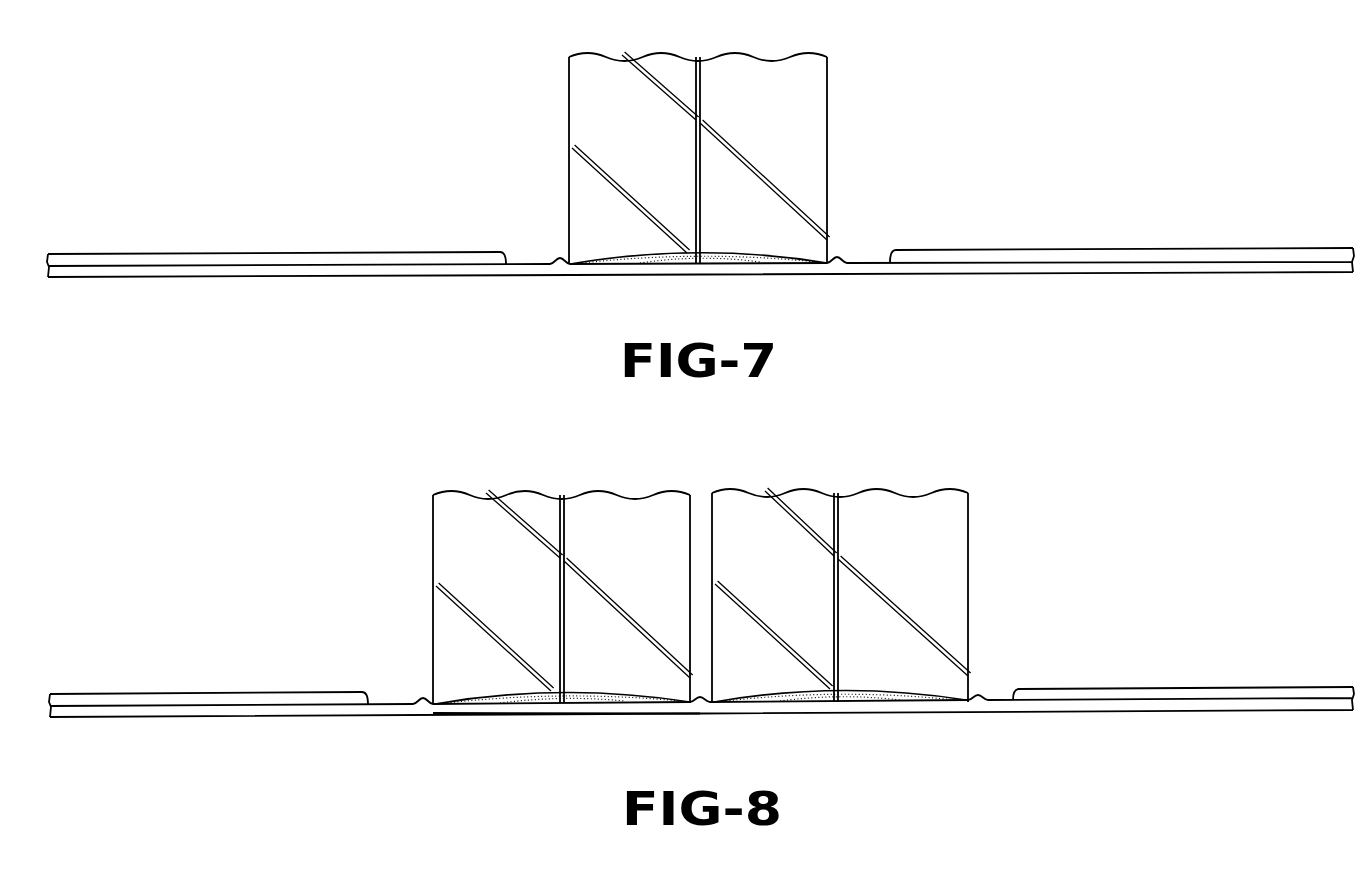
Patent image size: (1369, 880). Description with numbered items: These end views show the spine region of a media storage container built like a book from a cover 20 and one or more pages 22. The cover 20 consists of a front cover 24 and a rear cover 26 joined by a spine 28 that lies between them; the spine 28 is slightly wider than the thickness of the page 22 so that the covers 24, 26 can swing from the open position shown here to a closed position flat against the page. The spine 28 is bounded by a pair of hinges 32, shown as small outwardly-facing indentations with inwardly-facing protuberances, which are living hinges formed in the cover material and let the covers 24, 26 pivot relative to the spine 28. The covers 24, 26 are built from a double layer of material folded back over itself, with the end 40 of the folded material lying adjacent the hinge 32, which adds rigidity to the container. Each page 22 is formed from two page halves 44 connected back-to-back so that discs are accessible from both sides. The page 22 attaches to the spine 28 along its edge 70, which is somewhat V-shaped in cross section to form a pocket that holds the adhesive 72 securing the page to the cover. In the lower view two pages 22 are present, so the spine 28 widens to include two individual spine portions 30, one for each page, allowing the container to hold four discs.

In FIG. 7, the cover 20 is at (700, 270).
In FIG. 8, the cover 20 is at (701, 709).
In FIG. 7, the page 22 is at (701, 133).
In FIG. 8, the page 22 is at (699, 557).
In FIG. 7, the front cover 24 is at (273, 277).
In FIG. 8, the front cover 24 is at (277, 718).
In FIG. 7, the rear cover 26 is at (1172, 273).
In FIG. 8, the rear cover 26 is at (1205, 710).
In FIG. 7, the spine 28 is at (700, 278).
In FIG. 8, the spine 28 is at (585, 713).
In FIG. 8, the spine portion 30 is at (625, 712).
In FIG. 7, the hinge 32 is at (563, 268).
In FIG. 8, the hinge 32 is at (425, 710).
In FIG. 7, the end of the material 40 is at (504, 258).
In FIG. 8, the end of the material 40 is at (368, 697).
In FIG. 7, the page half 44 is at (607, 92).
In FIG. 8, the page half 44 is at (600, 513).
In FIG. 7, the edge 70 is at (740, 255).
In FIG. 8, the edge 70 is at (507, 697).
In FIG. 7, the adhesive 72 is at (712, 253).
In FIG. 8, the adhesive 72 is at (573, 697).